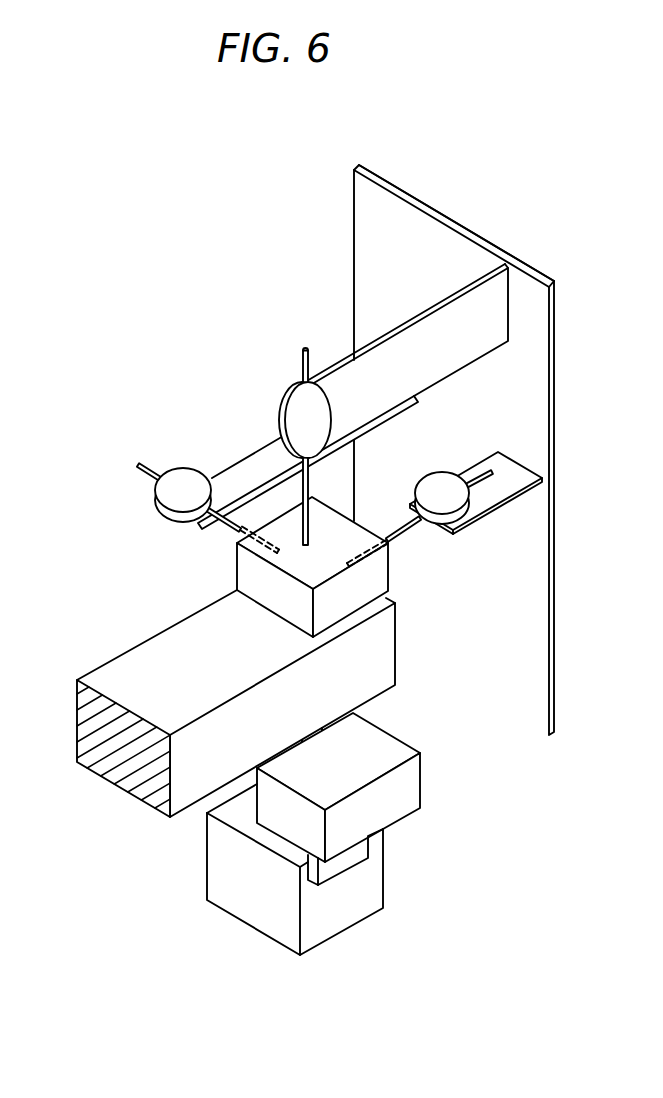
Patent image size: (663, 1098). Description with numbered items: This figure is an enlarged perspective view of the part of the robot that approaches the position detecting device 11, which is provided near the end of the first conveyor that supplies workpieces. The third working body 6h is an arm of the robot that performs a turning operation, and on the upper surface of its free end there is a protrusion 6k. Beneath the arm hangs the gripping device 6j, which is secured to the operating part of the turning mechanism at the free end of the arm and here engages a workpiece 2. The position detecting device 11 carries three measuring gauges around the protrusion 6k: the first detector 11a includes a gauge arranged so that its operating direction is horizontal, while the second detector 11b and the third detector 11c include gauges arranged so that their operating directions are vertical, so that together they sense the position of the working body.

The position detecting device 11 is at (545, 728).
The first detector 11a is at (435, 530).
The second detector 11b is at (177, 467).
The third detector 11c is at (283, 407).
The third working body 6h is at (100, 666).
The gripping device 6j is at (421, 781).
The protrusion 6k is at (237, 565).
The workpiece 2 is at (350, 927).